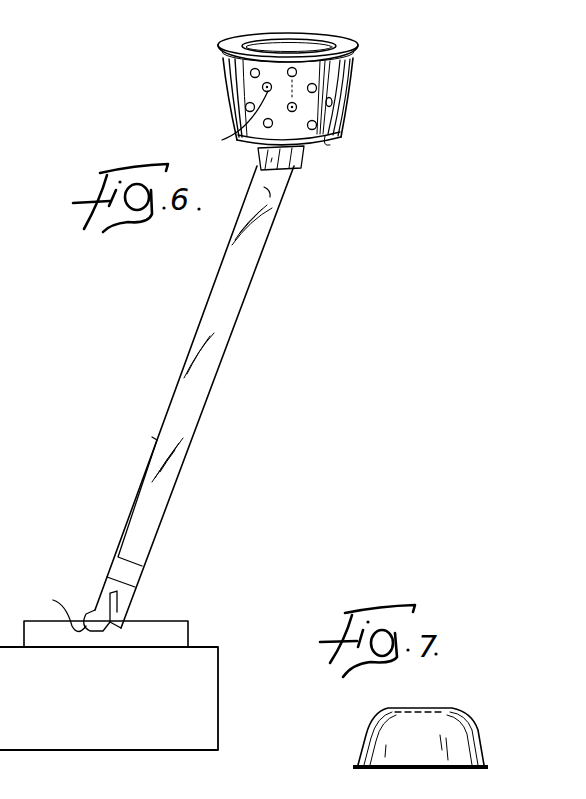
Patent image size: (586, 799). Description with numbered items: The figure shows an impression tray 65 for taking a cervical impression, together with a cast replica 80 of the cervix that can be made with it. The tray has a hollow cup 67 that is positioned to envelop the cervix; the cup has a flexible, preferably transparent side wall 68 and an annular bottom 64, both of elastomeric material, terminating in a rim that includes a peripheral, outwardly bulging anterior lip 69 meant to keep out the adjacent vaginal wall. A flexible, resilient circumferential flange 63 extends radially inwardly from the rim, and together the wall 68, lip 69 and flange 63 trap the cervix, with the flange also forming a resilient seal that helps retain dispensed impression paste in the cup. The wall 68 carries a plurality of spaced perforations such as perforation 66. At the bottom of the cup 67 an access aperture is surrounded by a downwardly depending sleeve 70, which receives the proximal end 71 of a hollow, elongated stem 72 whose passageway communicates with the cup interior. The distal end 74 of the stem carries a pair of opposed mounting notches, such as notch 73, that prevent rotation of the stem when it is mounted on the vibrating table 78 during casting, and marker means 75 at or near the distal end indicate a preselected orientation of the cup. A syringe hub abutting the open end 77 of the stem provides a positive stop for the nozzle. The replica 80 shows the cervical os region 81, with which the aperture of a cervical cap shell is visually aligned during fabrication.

In FIG. 6, the circumferential flange 63 is at (312, 34).
In FIG. 6, the annular bottom 64 is at (327, 141).
In FIG. 6, the impression tray 65 is at (292, 94).
In FIG. 6, the perforation 66 is at (226, 136).
In FIG. 6, the hollow cup 67 is at (231, 107).
In FIG. 6, the side wall 68 is at (347, 96).
In FIG. 6, the anterior lip 69 is at (219, 50).
In FIG. 6, the sleeve 70 is at (293, 163).
In FIG. 6, the proximal end 71 is at (270, 197).
In FIG. 6, the stem 72 is at (219, 397).
In FIG. 6, the mounting notch 73 is at (105, 605).
In FIG. 6, the distal end 74 is at (138, 597).
In FIG. 6, the marker means 75 is at (134, 507).
In FIG. 6, the open end 77 is at (52, 610).
In FIG. 6, the vibrating table 78 is at (180, 632).
In FIG. 7, the replica 80 is at (462, 738).
In FIG. 7, the cervical os region 81 is at (425, 708).